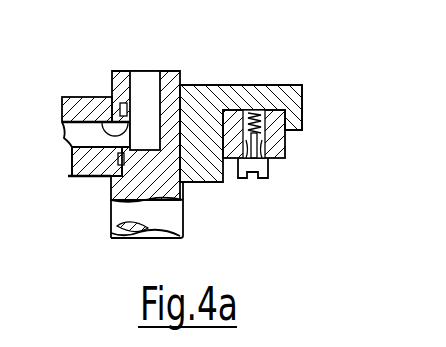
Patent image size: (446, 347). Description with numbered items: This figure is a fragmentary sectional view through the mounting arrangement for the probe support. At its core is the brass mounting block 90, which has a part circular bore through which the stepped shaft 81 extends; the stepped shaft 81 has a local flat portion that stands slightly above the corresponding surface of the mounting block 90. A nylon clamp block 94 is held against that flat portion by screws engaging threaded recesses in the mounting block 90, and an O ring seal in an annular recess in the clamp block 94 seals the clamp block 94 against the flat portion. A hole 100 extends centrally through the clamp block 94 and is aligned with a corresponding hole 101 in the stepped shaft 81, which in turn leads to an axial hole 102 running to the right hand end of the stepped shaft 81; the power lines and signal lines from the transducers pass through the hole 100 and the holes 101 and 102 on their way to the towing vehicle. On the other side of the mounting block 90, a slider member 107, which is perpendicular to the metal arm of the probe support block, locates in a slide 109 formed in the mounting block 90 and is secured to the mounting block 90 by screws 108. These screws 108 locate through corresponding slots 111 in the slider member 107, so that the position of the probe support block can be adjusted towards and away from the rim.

The stepped shaft 81 is at (118, 216).
The mounting block 90 is at (220, 93).
The clamp block 94 is at (77, 178).
The hole 100 is at (79, 122).
The hole 101 is at (90, 123).
The axial hole 102 is at (153, 85).
The slider member 107 is at (287, 150).
The screws 108 is at (272, 170).
The slide 109 is at (353, 93).
The slots 111 is at (252, 150).